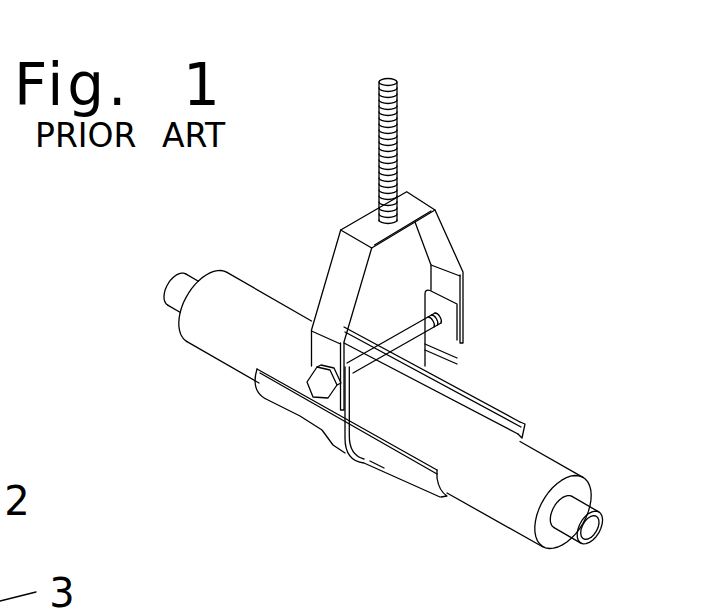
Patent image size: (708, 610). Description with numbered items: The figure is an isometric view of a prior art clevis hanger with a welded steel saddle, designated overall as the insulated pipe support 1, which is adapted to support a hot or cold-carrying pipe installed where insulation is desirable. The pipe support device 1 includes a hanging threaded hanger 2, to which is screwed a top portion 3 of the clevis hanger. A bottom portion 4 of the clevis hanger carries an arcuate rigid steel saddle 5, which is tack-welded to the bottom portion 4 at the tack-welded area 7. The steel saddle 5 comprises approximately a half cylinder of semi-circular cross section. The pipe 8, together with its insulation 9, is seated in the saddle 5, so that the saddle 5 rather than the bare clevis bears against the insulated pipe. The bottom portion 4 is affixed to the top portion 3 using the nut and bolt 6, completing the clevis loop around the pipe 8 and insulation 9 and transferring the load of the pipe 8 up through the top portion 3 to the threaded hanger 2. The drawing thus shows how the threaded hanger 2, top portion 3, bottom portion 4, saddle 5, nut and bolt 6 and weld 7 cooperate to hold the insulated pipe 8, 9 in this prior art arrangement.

The insulated pipe support 1 is at (604, 46).
The hanging threaded hanger 2 is at (435, 134).
The top portion of the clevis hanger 3 is at (436, 277).
The bottom portion of the clevis hanger 4 is at (348, 424).
The arcuate rigid steel saddle 5 is at (461, 356).
The nut and bolt 6 is at (276, 433).
The tack-welded area 7 is at (359, 481).
The pipe 8 is at (330, 408).
The insulation 9 is at (334, 410).